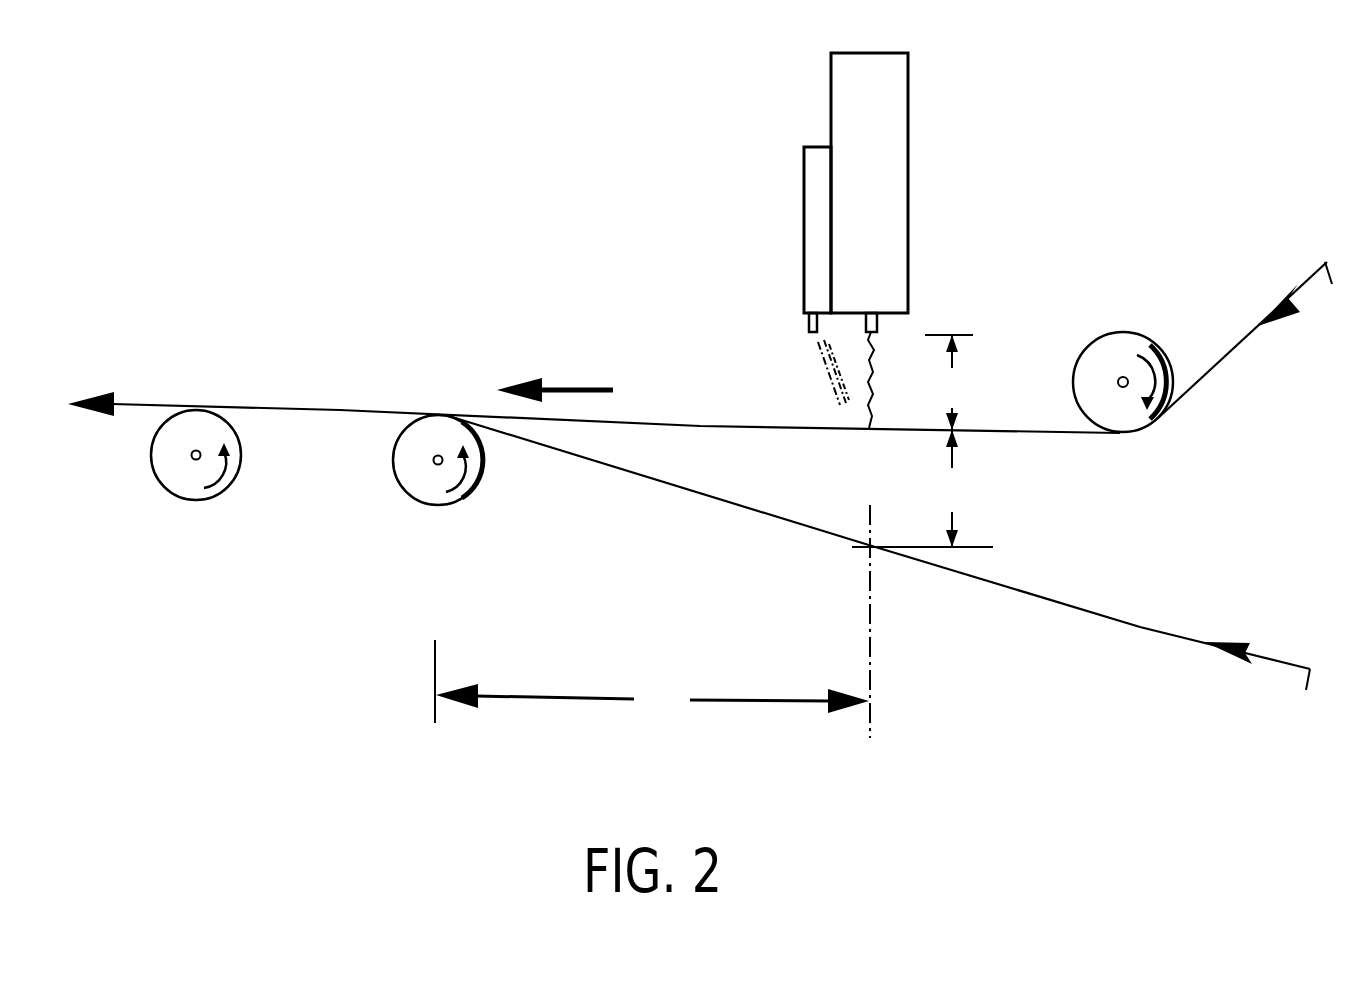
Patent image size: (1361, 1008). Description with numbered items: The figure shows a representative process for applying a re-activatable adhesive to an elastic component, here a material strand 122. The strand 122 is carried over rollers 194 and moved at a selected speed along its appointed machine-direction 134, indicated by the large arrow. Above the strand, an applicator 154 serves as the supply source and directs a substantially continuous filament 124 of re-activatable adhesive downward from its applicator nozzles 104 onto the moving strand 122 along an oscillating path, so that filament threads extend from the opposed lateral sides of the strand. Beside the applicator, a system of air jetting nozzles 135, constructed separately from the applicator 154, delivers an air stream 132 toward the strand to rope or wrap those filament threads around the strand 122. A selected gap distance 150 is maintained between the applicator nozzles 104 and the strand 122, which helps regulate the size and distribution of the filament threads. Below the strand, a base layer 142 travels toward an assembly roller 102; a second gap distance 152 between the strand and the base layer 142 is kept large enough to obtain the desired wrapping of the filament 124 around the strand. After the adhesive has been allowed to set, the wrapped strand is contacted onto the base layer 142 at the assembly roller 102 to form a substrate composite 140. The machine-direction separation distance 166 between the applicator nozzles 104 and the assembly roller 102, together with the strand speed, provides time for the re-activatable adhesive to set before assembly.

The roller 102 is at (408, 500).
The applicator nozzles 104 is at (878, 328).
The material strand 122 is at (1222, 365).
The substantially continuous filament 124 is at (875, 394).
The air stream 132 is at (815, 368).
The machine-direction 134 is at (570, 388).
The air jetting nozzles 135 is at (810, 325).
The substrate composite 140 is at (318, 410).
The base layer 142 is at (1152, 630).
The gap distance 150 is at (953, 382).
The gap distance 152 is at (922, 488).
The applicator 154 is at (895, 133).
The separation distance 166 is at (652, 621).
The idler roller 194 is at (176, 490).